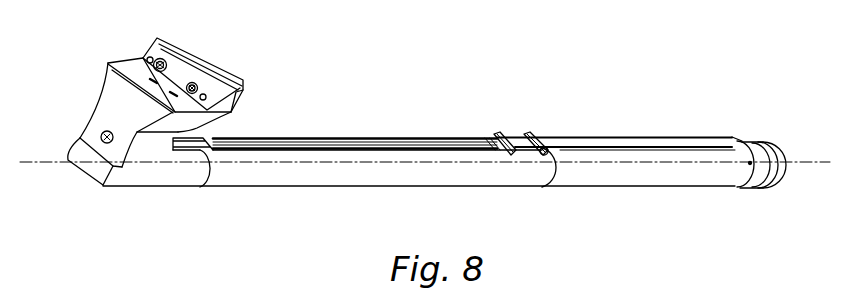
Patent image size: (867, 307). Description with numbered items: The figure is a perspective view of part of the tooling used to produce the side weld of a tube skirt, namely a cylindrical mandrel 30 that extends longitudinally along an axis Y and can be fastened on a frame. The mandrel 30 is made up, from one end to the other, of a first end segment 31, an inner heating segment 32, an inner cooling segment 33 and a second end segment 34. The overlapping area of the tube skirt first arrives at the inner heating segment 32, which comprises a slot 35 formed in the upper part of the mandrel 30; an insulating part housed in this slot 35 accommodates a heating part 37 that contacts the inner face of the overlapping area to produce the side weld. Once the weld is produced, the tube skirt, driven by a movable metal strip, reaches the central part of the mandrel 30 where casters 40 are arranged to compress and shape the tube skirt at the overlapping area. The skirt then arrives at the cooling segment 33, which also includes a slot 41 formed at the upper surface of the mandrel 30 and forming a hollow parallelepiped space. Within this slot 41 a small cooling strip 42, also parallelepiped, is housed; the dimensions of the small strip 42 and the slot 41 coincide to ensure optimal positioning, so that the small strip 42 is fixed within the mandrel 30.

The cylindrical mandrel 30 is at (593, 72).
The first end segment 31 is at (98, 78).
The inner heating segment 32 is at (329, 160).
The inner cooling segment 33 is at (584, 177).
The second end segment 34 is at (777, 189).
The slot 35 is at (242, 150).
The heating part 37 is at (383, 152).
The casters 40 is at (520, 125).
The slot 41 is at (684, 138).
The small cooling strip 42 is at (618, 150).